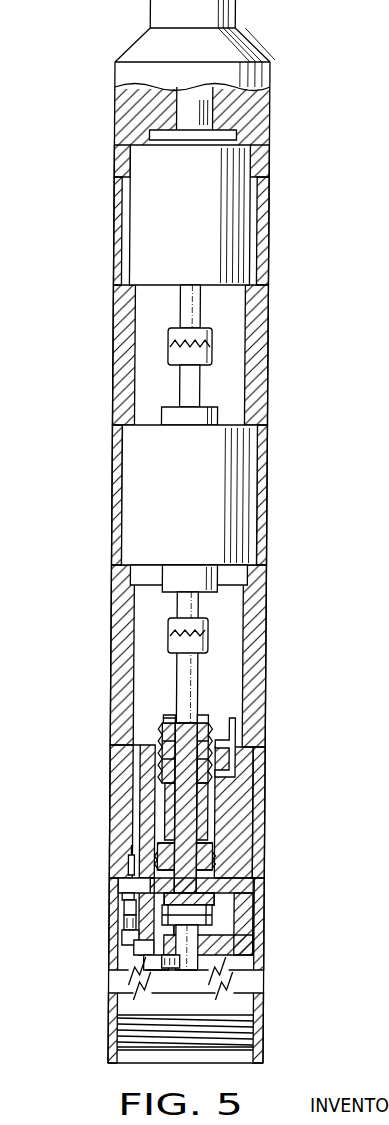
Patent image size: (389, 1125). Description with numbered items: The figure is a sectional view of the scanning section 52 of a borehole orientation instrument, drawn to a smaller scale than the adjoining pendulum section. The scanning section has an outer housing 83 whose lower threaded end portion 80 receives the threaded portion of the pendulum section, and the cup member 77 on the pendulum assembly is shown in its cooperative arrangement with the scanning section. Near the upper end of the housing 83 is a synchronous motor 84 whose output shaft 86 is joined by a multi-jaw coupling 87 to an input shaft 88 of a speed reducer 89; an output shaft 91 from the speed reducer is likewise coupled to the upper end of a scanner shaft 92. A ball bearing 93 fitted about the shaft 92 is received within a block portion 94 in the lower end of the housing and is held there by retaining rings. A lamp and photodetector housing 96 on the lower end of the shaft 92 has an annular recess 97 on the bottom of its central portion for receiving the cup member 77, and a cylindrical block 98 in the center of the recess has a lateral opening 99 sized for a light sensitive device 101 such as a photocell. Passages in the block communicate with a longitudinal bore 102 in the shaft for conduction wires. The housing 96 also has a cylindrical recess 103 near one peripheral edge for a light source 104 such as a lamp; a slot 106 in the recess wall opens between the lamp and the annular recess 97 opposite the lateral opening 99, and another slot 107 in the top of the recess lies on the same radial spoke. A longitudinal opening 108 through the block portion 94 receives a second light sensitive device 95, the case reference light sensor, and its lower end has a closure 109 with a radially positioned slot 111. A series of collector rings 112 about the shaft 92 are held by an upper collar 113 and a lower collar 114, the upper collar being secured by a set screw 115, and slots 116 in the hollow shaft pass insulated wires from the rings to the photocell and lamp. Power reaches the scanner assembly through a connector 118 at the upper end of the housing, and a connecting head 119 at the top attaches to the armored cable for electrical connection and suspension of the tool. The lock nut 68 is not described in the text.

The scanning section 52 is at (109, 402).
The lock nut 68 is at (214, 965).
The cup member 77 is at (235, 952).
The threaded end portion 80 is at (258, 1046).
The outer housing 83 is at (268, 245).
The synchronous motor 84 is at (215, 206).
The output shaft 86 is at (188, 313).
The multi-jaw coupling 87 is at (205, 343).
The input shaft 88 is at (190, 390).
The speed reducer 89 is at (222, 475).
The output shaft 91 is at (188, 613).
The scanner shaft 92 is at (188, 676).
The ball bearing 93 is at (216, 852).
The block portion 94 is at (240, 870).
The second light sensitive device 95 is at (135, 866).
The lamp and photodetector housing 96 is at (254, 890).
The annular recess 97 is at (246, 918).
The cylindrical block 98 is at (266, 904).
The lateral opening 99 is at (218, 922).
The light sensitive device 101 is at (150, 963).
The longitudinal bore 102 is at (195, 822).
The cylindrical recess 103 is at (130, 920).
The light source 104 is at (128, 938).
The slot 106 is at (145, 950).
The slot 107 is at (130, 906).
The longitudinal opening 108 is at (140, 806).
The closure 109 is at (122, 882).
The slot 111 is at (128, 896).
The collector rings 112 is at (218, 746).
The upper collar 113 is at (208, 722).
The lower collar 114 is at (210, 800).
The set screw 115 is at (170, 722).
The slots 116 is at (238, 740).
The connector 118 is at (195, 116).
The connecting head 119 is at (248, 58).